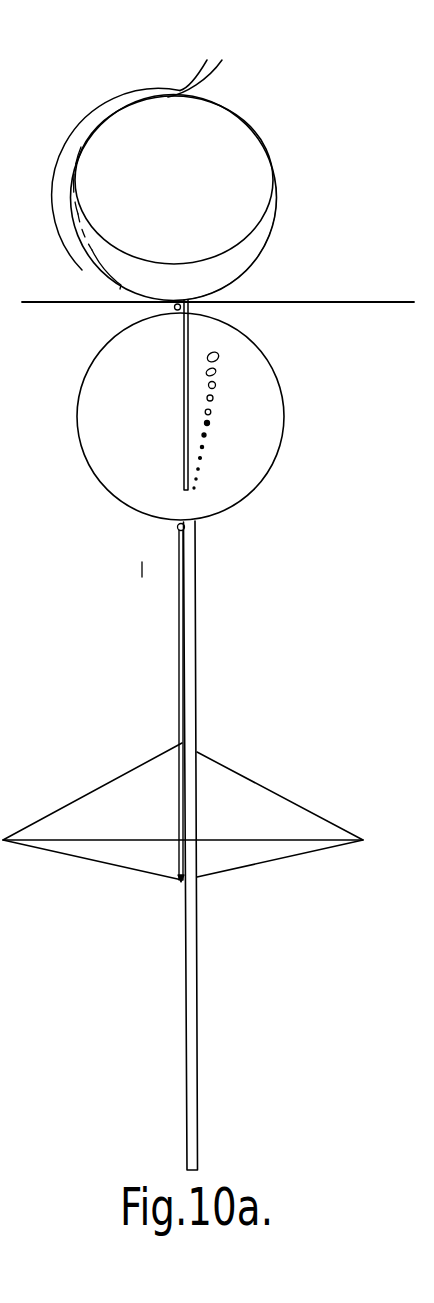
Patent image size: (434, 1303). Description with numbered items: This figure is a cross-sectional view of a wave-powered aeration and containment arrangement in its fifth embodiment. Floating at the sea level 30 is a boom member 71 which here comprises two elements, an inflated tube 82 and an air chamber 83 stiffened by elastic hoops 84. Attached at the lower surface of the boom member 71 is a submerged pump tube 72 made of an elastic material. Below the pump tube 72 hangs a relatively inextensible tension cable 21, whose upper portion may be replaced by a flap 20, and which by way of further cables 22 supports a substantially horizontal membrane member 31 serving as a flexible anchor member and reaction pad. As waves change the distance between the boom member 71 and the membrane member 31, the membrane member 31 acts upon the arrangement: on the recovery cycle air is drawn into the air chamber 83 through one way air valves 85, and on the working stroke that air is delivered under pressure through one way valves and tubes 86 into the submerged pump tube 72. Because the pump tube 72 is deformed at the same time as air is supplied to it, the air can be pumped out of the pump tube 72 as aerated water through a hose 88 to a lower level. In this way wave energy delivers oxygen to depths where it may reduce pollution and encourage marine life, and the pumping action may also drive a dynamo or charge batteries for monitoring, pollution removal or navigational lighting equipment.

The flap 20 is at (180, 588).
The tension cable 21 is at (182, 668).
The further cables 22 is at (108, 780).
The sea level 30 is at (85, 301).
The membrane member 31 is at (163, 838).
The boom member 71 is at (270, 157).
The pump tube 72 is at (283, 423).
The inflated tube 82 is at (218, 132).
The air chamber 83 is at (112, 252).
The elastic hoops 84 is at (265, 248).
The one way air valves 85 is at (211, 61).
The one way valves and tubes 86 is at (184, 428).
The hose 88 is at (192, 718).